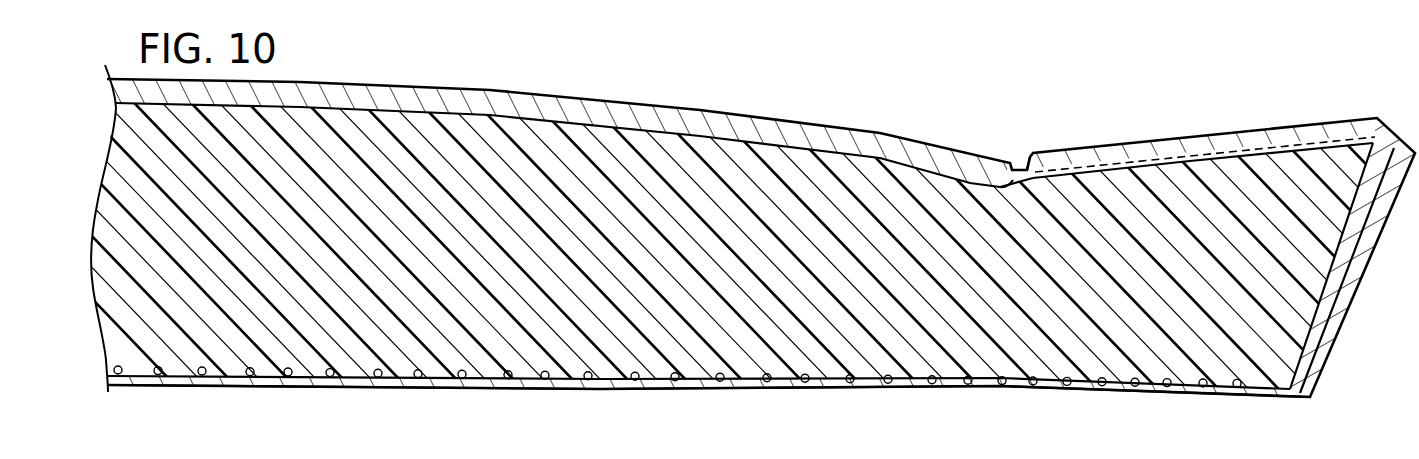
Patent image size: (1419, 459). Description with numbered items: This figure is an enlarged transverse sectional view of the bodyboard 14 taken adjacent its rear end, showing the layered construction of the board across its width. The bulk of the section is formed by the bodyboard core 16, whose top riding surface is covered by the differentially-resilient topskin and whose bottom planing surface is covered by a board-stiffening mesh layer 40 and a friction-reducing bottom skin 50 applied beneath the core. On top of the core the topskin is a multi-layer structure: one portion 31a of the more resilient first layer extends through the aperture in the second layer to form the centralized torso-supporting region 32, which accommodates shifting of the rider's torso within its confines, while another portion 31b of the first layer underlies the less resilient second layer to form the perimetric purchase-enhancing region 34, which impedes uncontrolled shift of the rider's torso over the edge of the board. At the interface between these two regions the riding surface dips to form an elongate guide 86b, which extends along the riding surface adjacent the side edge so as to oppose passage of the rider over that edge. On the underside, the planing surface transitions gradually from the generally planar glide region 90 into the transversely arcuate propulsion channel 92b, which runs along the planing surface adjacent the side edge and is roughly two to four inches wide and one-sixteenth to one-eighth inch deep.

The bodyboard 14 is at (860, 105).
The bodyboard core 16 is at (352, 337).
The portion of the first layer 31a is at (353, 93).
The portion of the first layer 31b is at (1088, 153).
The torso-supporting region 32 is at (541, 90).
The purchase-enhancing region 34 is at (1206, 127).
The mesh layer 40 is at (200, 374).
The bottom skin 50 is at (254, 386).
The guide 86b is at (987, 157).
The glide region 90 is at (538, 388).
The propulsion channel 92b is at (1055, 385).